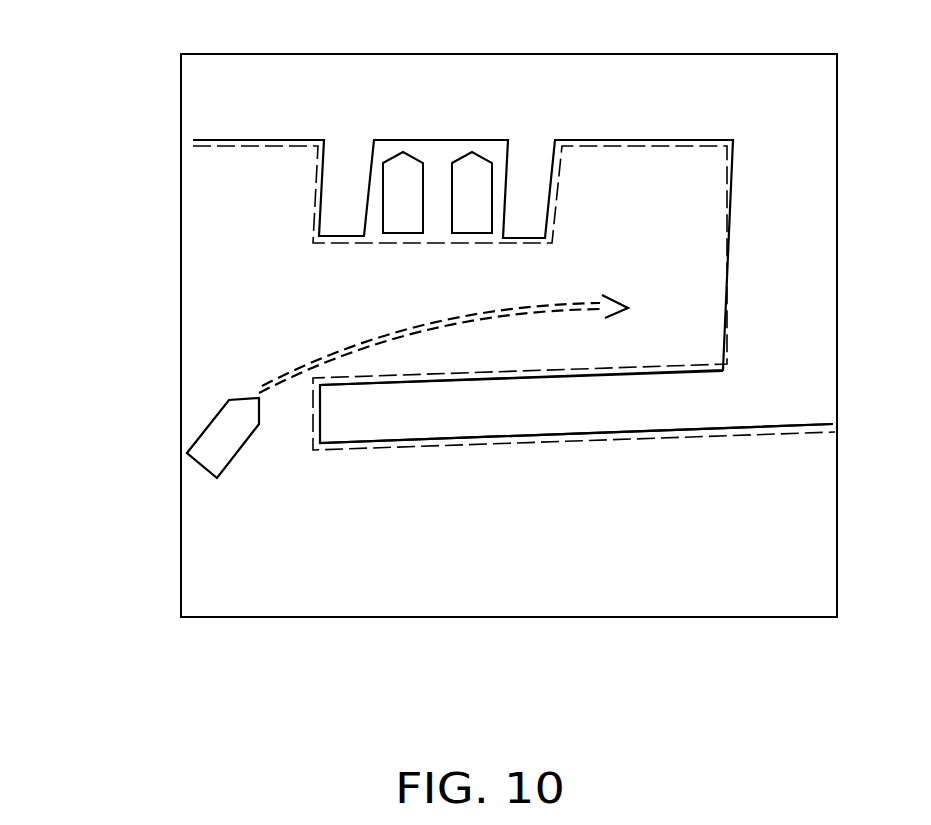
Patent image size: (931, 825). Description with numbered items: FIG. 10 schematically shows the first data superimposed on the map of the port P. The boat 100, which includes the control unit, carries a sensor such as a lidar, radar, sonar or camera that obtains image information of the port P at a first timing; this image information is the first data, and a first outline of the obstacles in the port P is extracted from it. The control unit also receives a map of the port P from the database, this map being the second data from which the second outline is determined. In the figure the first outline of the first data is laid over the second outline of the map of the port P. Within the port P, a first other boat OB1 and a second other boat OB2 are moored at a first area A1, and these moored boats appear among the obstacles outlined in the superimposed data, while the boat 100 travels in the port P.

The first area A1 is at (436, 157).
The first other boat OB1 is at (472, 192).
The second other boat OB2 is at (403, 192).
The port P is at (576, 407).
The boat 100 is at (407, 386).